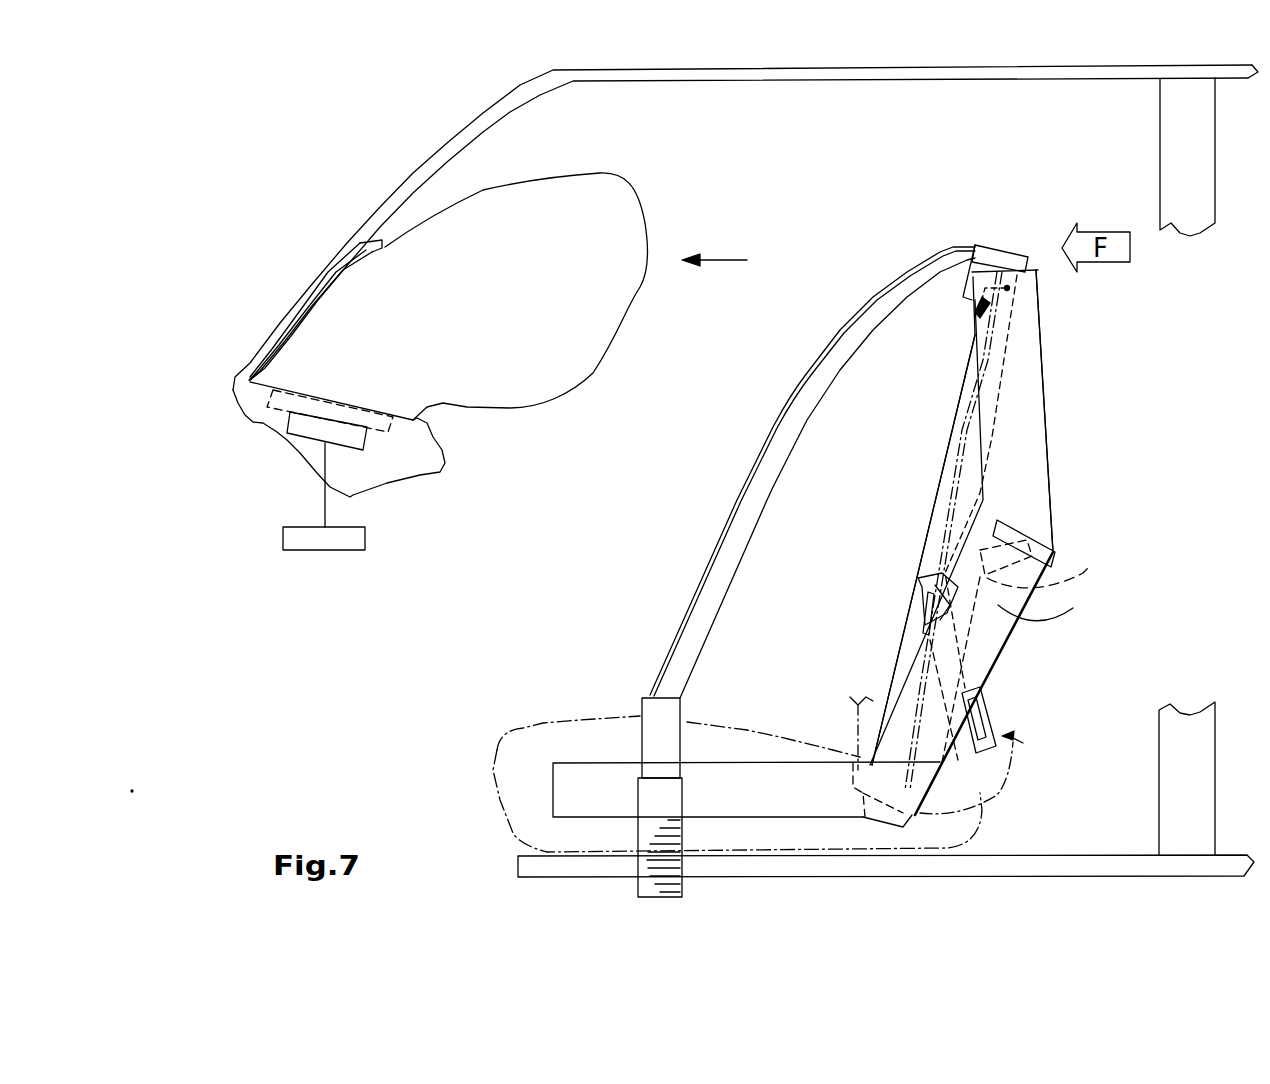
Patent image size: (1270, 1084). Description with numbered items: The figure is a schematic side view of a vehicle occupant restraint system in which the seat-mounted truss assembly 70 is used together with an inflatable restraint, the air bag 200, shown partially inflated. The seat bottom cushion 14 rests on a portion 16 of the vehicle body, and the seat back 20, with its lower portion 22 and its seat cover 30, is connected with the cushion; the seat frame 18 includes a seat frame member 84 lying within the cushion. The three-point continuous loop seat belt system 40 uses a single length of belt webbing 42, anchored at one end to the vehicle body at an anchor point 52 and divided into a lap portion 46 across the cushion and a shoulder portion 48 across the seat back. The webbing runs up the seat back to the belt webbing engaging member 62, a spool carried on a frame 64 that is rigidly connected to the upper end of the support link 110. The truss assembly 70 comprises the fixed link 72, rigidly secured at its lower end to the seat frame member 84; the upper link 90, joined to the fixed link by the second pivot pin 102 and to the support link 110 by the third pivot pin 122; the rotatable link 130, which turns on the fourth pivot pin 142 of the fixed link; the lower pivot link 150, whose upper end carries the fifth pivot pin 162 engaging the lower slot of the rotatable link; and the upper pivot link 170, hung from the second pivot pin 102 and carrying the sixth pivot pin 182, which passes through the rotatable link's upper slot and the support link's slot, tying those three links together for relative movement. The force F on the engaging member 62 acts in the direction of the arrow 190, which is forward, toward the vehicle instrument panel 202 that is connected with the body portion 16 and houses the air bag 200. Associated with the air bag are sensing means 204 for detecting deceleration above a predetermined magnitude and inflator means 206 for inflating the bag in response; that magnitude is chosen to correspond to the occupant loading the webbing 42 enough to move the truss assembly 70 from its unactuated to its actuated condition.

The seat bottom cushion 14 is at (519, 728).
The portion of the vehicle body 16 is at (555, 882).
The seat frame 18 is at (782, 760).
The seat back 20 is at (857, 727).
The lower portion of the seat back 22 is at (997, 795).
The seat cover 30 is at (910, 422).
The three-point continuous loop seat belt system 40 is at (793, 472).
The belt webbing 42 is at (738, 493).
The lap portion 46 is at (640, 713).
The shoulder portion 48 is at (690, 678).
The anchor point 52 is at (637, 882).
The belt webbing engaging member 62 is at (973, 320).
The frame 64 is at (998, 247).
The truss assembly 70 is at (1058, 438).
The fixed link 72 is at (1046, 604).
The seat frame member 84 is at (797, 818).
The upper link 90 is at (1027, 417).
The second pivot pin 102 is at (1018, 552).
The support link 110 is at (940, 538).
The third pivot pin 122 is at (1010, 288).
The rotatable link 130 is at (998, 700).
The fourth pivot pin 142 is at (957, 665).
The lower pivot link 150 is at (1055, 566).
The fifth pivot pin 162 is at (982, 730).
The upper pivot link 170 is at (957, 747).
The sixth pivot pin 182 is at (925, 588).
The arrow 190 is at (722, 260).
The air bag 200 is at (610, 175).
The vehicle instrument panel 202 is at (443, 448).
The sensing means 204 is at (283, 540).
The inflator means 206 is at (253, 421).